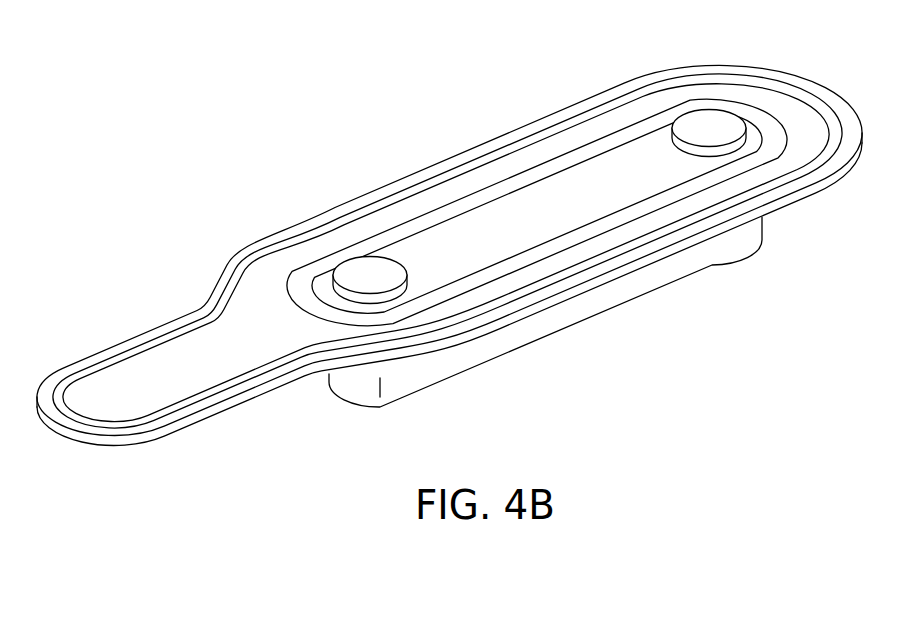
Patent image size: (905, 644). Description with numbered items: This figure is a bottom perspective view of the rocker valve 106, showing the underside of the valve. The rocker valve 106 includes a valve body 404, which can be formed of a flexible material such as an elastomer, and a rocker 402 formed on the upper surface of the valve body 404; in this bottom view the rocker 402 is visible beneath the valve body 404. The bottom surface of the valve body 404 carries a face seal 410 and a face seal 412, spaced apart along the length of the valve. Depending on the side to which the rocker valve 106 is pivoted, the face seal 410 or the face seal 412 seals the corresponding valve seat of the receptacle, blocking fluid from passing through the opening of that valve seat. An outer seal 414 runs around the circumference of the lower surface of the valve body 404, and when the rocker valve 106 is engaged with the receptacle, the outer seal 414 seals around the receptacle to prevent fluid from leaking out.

The rocker valve 106 is at (310, 395).
The rocker 402 is at (406, 387).
The valve body 404 is at (527, 318).
The face seal 410 is at (367, 273).
The face seal 412 is at (708, 128).
The outer seal 414 is at (248, 268).